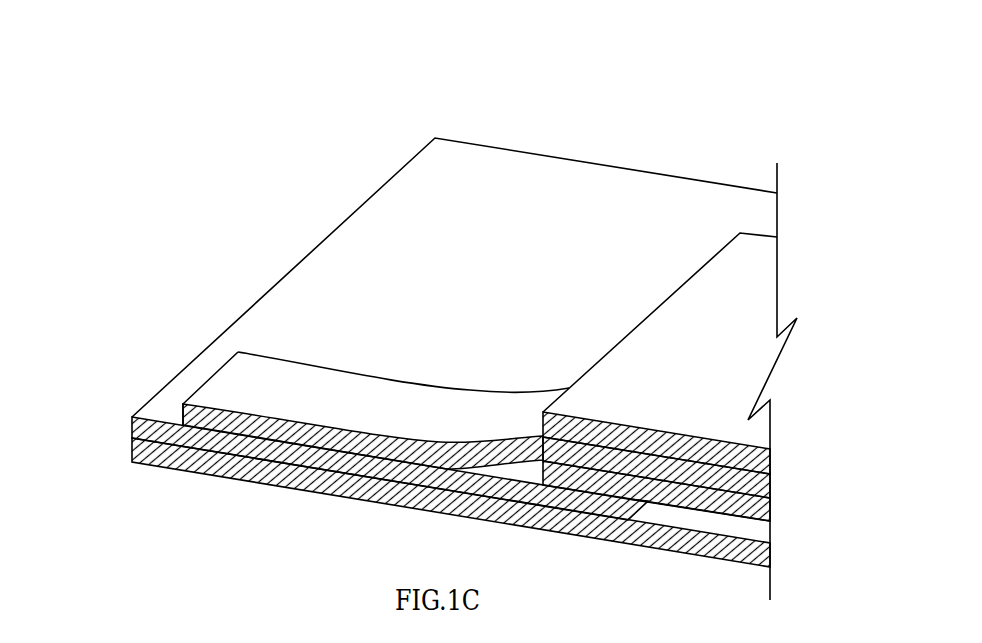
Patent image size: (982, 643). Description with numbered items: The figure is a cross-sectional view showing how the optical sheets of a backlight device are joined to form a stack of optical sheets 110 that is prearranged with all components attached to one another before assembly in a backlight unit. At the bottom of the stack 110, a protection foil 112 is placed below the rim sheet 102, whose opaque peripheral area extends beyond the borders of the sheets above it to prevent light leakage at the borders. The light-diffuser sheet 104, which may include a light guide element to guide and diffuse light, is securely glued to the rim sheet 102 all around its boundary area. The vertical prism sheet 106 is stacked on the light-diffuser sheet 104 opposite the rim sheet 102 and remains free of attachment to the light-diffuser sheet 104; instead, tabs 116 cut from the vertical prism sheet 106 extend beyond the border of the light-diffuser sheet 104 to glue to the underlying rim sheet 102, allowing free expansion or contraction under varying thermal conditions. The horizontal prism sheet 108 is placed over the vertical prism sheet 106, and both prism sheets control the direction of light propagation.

The stack of optical sheets 110 is at (681, 89).
The rim sheet 102 is at (132, 428).
The protection foil 112 is at (132, 455).
The tabs 116 is at (184, 419).
The light-diffuser sheet 104 is at (770, 506).
The vertical prism sheet 106 is at (770, 481).
The horizontal prism sheet 108 is at (770, 456).